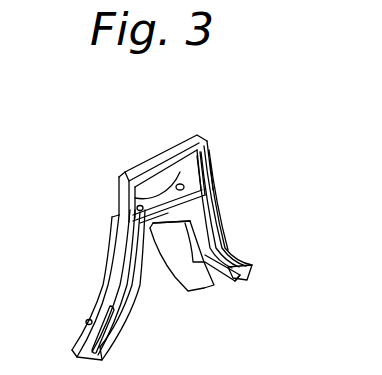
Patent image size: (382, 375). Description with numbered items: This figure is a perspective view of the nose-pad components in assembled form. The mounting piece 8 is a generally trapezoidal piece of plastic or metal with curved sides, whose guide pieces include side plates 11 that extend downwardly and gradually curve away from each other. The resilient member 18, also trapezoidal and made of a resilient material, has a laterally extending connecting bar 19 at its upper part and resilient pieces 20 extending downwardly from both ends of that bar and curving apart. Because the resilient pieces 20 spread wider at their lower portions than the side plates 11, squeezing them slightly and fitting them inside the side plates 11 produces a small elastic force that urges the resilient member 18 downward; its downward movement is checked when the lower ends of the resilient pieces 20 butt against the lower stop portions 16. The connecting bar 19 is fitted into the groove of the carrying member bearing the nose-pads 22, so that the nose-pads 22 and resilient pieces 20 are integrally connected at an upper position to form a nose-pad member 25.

The mounting piece 8 is at (218, 140).
The side plates 11 is at (211, 183).
The resilient member 18 is at (212, 213).
The resilient pieces 20 is at (228, 247).
The lower stop portions 16 is at (235, 283).
The nose-pad member 25 is at (104, 217).
The connecting bar 19 is at (167, 223).
The nose-pads 22 is at (198, 289).